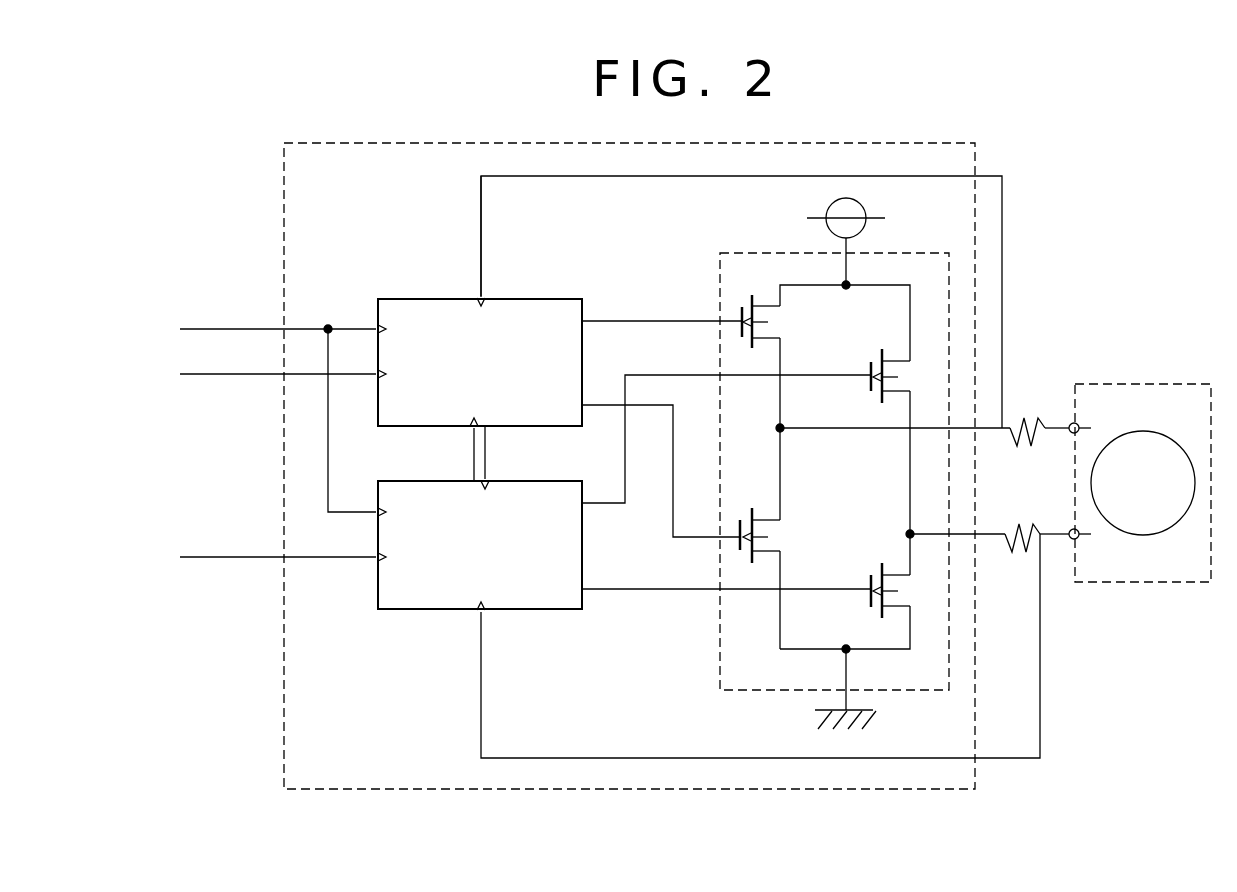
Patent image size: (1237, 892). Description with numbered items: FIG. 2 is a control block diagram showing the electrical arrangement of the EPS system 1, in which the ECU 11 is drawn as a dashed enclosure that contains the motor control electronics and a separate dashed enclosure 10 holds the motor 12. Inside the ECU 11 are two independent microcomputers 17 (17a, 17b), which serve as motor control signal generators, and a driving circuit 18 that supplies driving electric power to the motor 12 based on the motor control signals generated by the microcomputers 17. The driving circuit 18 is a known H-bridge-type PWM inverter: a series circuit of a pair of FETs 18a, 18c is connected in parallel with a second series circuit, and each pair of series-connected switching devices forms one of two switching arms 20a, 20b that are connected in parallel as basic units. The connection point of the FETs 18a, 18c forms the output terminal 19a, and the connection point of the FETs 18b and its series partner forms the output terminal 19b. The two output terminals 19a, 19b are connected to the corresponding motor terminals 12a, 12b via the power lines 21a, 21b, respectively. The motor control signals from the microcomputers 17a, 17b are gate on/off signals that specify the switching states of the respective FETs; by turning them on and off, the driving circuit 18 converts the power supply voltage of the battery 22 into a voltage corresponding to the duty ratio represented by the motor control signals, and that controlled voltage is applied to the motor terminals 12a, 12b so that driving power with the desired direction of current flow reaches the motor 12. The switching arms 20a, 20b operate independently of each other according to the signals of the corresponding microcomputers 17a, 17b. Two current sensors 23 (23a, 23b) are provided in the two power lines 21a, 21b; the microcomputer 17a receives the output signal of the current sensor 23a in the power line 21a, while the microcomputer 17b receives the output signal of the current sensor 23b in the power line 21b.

The motor drive device 1 is at (1138, 157).
The motor unit 10 is at (1126, 383).
The ECU 11 is at (977, 150).
The motor 12 is at (1190, 447).
The motor terminal 12a is at (1106, 421).
The motor terminal 12b is at (1079, 540).
The microcomputers 17 is at (493, 455).
The microcomputer 17a is at (562, 297).
The microcomputer 17b is at (568, 612).
The driving circuit 18 is at (770, 252).
The FET 18a is at (746, 296).
The FET 18b is at (880, 349).
The FET 18c is at (751, 508).
The output terminal 19a is at (778, 427).
The output terminal 19b is at (908, 532).
The switching arm 20a is at (835, 339).
The switching arm 20b is at (904, 472).
The power line 21a is at (1046, 427).
The power line 21b is at (1057, 540).
The battery 22 is at (870, 218).
The current sensors 23 is at (934, 505).
The current sensor 23a is at (924, 414).
The current sensor 23b is at (999, 576).